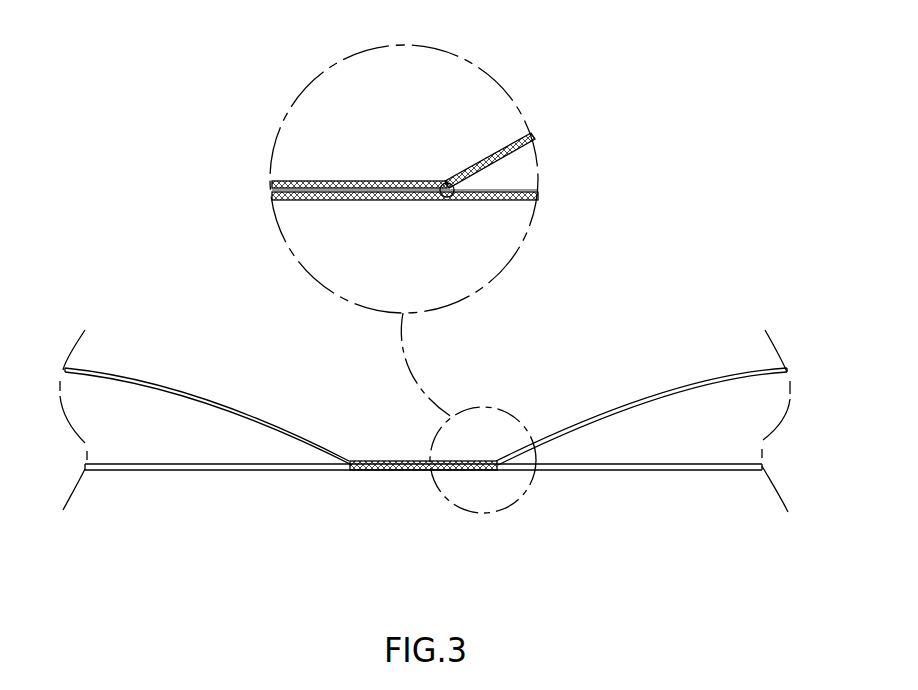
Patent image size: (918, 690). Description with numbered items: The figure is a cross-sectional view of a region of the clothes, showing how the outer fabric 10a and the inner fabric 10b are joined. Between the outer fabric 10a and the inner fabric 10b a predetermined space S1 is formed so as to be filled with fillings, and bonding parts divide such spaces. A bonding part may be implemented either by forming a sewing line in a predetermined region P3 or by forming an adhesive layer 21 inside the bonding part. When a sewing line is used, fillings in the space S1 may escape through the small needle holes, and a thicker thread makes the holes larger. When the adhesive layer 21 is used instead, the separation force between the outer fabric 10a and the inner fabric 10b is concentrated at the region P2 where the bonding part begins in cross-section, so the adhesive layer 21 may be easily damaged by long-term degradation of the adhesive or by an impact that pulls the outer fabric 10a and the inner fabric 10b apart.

The outer fabric 10a is at (303, 181).
The inner fabric 10b is at (430, 200).
The adhesive layer 21 is at (330, 200).
The region in which a bonding part begins P2 is at (538, 213).
The predetermined region P3 is at (350, 478).
The space S1 is at (156, 437).